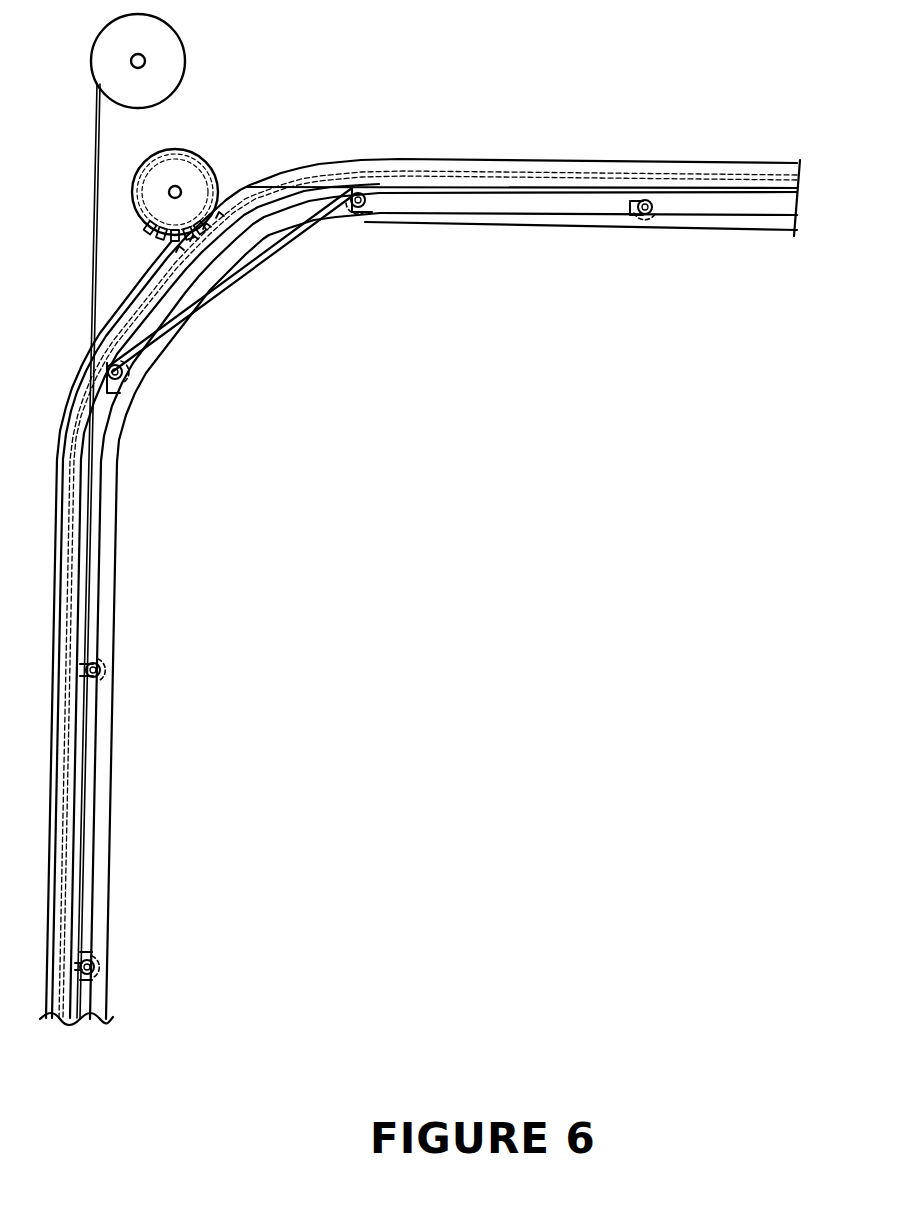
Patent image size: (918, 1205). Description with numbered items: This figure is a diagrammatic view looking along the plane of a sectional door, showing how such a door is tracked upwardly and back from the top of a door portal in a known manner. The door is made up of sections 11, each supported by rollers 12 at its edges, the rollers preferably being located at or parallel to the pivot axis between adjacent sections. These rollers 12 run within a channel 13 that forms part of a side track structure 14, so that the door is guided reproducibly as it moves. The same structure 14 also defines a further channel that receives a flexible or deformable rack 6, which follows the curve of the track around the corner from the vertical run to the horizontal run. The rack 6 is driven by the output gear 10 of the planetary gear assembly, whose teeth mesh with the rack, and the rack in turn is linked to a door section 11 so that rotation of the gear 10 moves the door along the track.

The rack 6 is at (226, 218).
The output gear 10 is at (203, 212).
The door section 11 is at (450, 195).
The rollers 12 is at (363, 207).
The channel 13 is at (760, 207).
The structure 14 is at (578, 222).